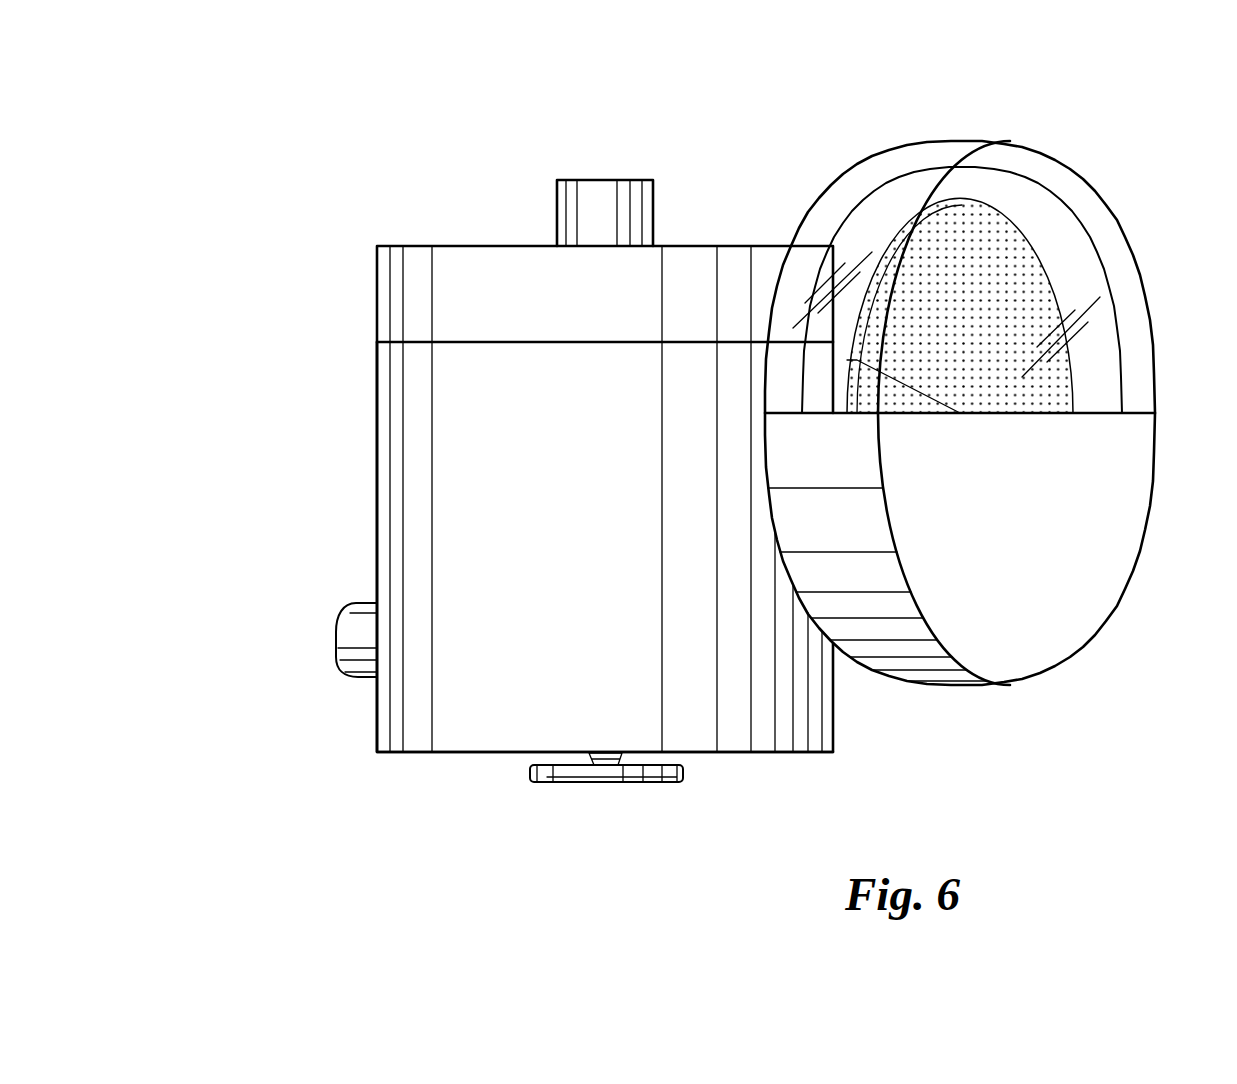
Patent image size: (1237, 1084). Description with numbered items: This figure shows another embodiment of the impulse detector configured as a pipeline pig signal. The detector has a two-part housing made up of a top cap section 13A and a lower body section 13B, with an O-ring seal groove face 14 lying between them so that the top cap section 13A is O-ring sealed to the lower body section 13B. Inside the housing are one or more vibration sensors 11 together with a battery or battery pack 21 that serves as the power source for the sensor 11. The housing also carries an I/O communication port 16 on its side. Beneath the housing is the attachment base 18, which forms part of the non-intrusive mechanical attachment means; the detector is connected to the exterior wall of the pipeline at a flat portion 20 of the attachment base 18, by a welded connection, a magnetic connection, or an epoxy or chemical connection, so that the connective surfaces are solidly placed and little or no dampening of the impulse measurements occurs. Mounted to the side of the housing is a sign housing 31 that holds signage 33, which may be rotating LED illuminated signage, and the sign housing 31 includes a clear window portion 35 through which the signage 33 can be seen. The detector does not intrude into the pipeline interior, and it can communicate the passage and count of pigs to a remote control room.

The vibration sensor 11 is at (515, 499).
The battery or battery pack 21 is at (508, 535).
The top cap section 13A is at (495, 246).
The lower body section 13B is at (377, 437).
The O-ring seal groove face 14 is at (377, 342).
The I/O communication port 16 is at (356, 604).
The attachment base 18 is at (612, 784).
The flat portion of the attachment base 20 is at (577, 787).
The sign housing 31 is at (931, 141).
The signage 33 is at (982, 290).
The clear window portion 35 is at (1047, 183).